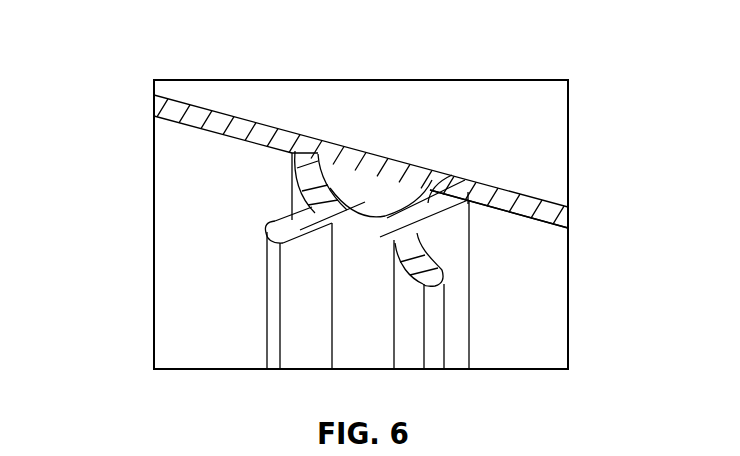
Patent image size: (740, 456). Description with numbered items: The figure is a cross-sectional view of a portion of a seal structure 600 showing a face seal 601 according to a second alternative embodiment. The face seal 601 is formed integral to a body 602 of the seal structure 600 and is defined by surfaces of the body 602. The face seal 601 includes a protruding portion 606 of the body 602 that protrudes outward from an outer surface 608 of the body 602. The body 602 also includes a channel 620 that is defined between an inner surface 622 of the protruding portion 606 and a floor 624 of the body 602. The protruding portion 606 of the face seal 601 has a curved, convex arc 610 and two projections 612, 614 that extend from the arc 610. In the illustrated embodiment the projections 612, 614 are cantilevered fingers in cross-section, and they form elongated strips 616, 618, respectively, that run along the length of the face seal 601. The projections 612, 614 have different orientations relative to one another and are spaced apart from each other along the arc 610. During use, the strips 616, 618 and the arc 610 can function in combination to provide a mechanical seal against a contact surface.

The seal structure 600 is at (203, 42).
The face seal 601 is at (203, 263).
The body 602 is at (193, 105).
The protruding portion 606 is at (445, 243).
The outer surface 608 is at (525, 237).
The arc 610 is at (317, 181).
The projection 612 is at (283, 222).
The projection 614 is at (442, 285).
The elongated strip 616 is at (300, 303).
The elongated strip 618 is at (407, 348).
The channel 620 is at (364, 210).
The inner surface 622 is at (432, 200).
The floor 624 is at (428, 185).